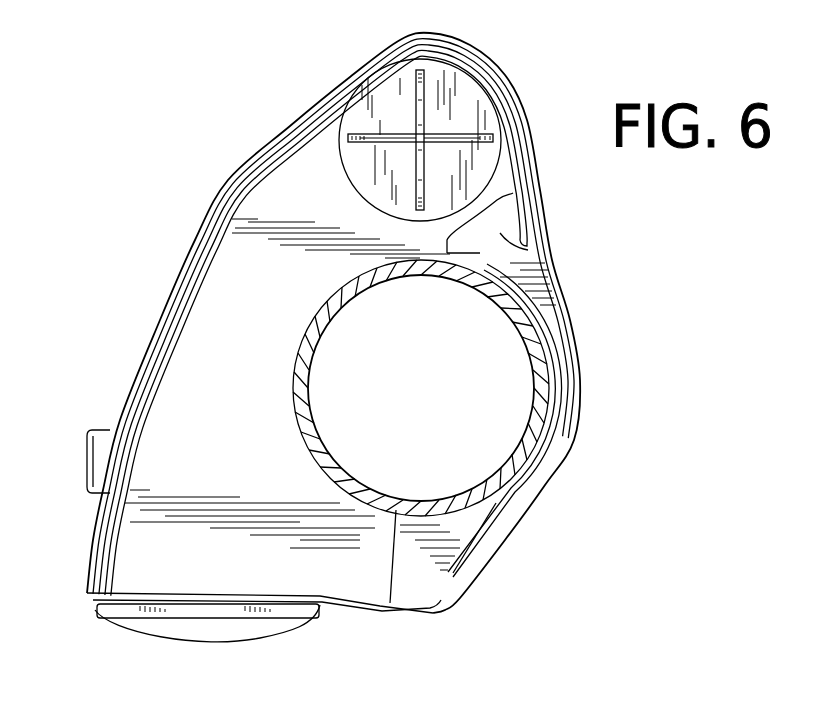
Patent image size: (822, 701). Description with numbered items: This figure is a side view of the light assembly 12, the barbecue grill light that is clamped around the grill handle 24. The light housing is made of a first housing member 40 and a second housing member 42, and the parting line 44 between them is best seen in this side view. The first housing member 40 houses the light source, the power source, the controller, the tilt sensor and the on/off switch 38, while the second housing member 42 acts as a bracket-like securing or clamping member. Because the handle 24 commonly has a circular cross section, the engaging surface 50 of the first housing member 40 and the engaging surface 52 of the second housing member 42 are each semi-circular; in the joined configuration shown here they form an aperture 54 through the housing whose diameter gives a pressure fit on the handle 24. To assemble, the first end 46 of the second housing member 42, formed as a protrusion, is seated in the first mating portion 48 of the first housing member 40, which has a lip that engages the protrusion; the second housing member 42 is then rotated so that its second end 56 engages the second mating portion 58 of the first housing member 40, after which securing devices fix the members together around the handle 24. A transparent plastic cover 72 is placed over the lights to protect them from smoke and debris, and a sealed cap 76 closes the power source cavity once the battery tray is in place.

The light assembly 12 is at (636, 318).
The handle 24 is at (540, 424).
The on/off switch 38 is at (87, 470).
The first housing member 40 is at (217, 313).
The second housing member 42 is at (497, 503).
The parting line 44 is at (382, 572).
The first end 46 is at (500, 233).
The first mating portion 48 is at (497, 190).
The engaging surface 50 is at (330, 302).
The engaging surface 52 is at (525, 460).
The aperture 54 is at (460, 473).
The second end 56 is at (428, 597).
The second mating portion 58 is at (350, 575).
The cover 72 is at (143, 637).
The sealed cap 76 is at (470, 92).